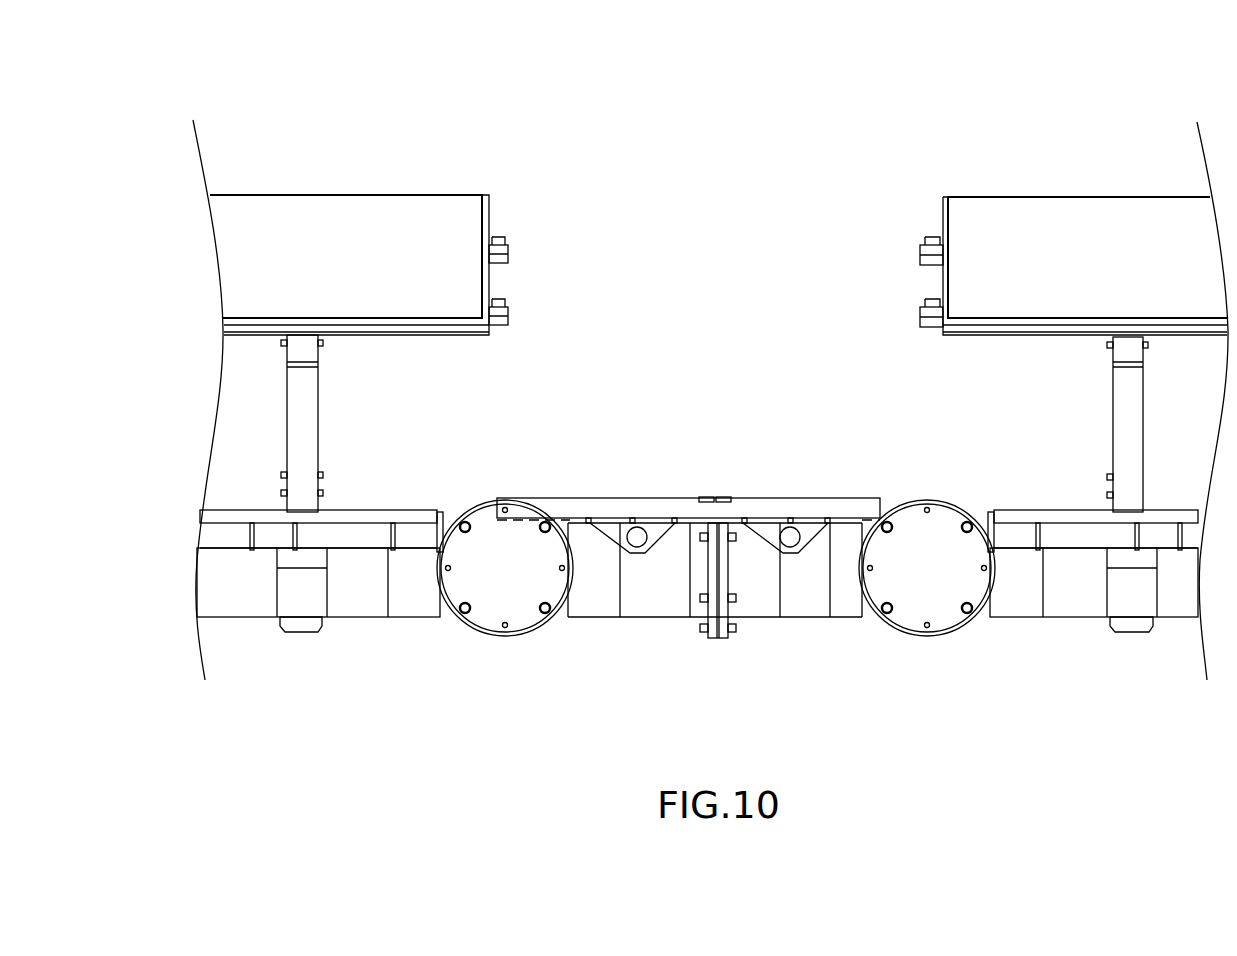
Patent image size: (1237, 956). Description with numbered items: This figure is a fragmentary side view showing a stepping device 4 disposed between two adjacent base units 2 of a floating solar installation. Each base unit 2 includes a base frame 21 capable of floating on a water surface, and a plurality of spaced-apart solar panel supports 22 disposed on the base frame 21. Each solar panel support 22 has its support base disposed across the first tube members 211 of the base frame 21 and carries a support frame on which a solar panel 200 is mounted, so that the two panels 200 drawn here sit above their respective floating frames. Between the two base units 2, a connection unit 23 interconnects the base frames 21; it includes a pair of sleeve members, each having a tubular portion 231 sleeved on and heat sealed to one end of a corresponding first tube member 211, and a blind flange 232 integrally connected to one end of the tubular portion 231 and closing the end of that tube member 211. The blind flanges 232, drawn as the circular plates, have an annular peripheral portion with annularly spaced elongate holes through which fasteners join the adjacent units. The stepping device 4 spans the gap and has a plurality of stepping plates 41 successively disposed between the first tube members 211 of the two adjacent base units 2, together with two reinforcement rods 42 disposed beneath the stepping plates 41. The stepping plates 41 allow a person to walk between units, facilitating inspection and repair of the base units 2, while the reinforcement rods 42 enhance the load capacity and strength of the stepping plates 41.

The base unit 2 is at (321, 168).
The solar panel 200 is at (447, 240).
The stepping device 4 is at (688, 519).
The stepping plate 41 is at (622, 500).
The reinforcement rod 42 is at (637, 550).
The connection unit 23 is at (724, 420).
The tubular portion 231 is at (673, 617).
The blind flange 232 is at (479, 497).
The base frame 21 is at (408, 622).
The first tube member 211 is at (357, 618).
The solar panel support 22 is at (298, 638).